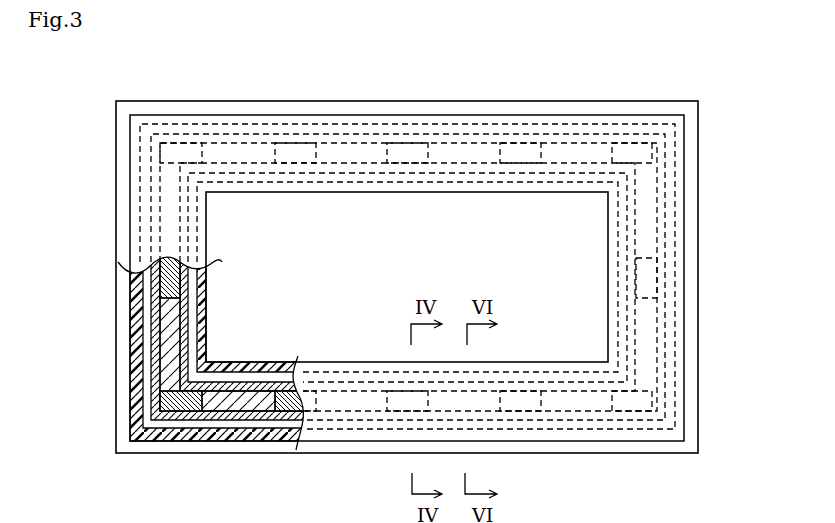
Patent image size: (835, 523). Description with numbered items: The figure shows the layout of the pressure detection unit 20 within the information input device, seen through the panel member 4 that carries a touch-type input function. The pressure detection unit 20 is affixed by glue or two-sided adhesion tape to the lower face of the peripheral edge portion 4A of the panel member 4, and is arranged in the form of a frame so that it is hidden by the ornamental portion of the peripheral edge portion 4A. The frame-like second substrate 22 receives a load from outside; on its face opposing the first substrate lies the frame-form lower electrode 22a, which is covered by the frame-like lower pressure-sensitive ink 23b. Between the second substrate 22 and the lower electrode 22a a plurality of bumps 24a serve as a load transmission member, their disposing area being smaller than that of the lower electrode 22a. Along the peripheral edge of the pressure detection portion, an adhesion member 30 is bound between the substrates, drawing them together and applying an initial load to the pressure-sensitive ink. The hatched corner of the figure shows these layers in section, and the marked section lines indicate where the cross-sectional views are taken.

The panel member 4 is at (401, 276).
The peripheral edge portion 4A is at (537, 103).
The pressure detection unit 20 is at (363, 314).
The second substrate 22 is at (618, 442).
The lower electrode 22a is at (262, 408).
The lower pressure-sensitive ink 23b is at (238, 386).
The bump 24a is at (500, 160).
The adhesion member 30 is at (138, 277).